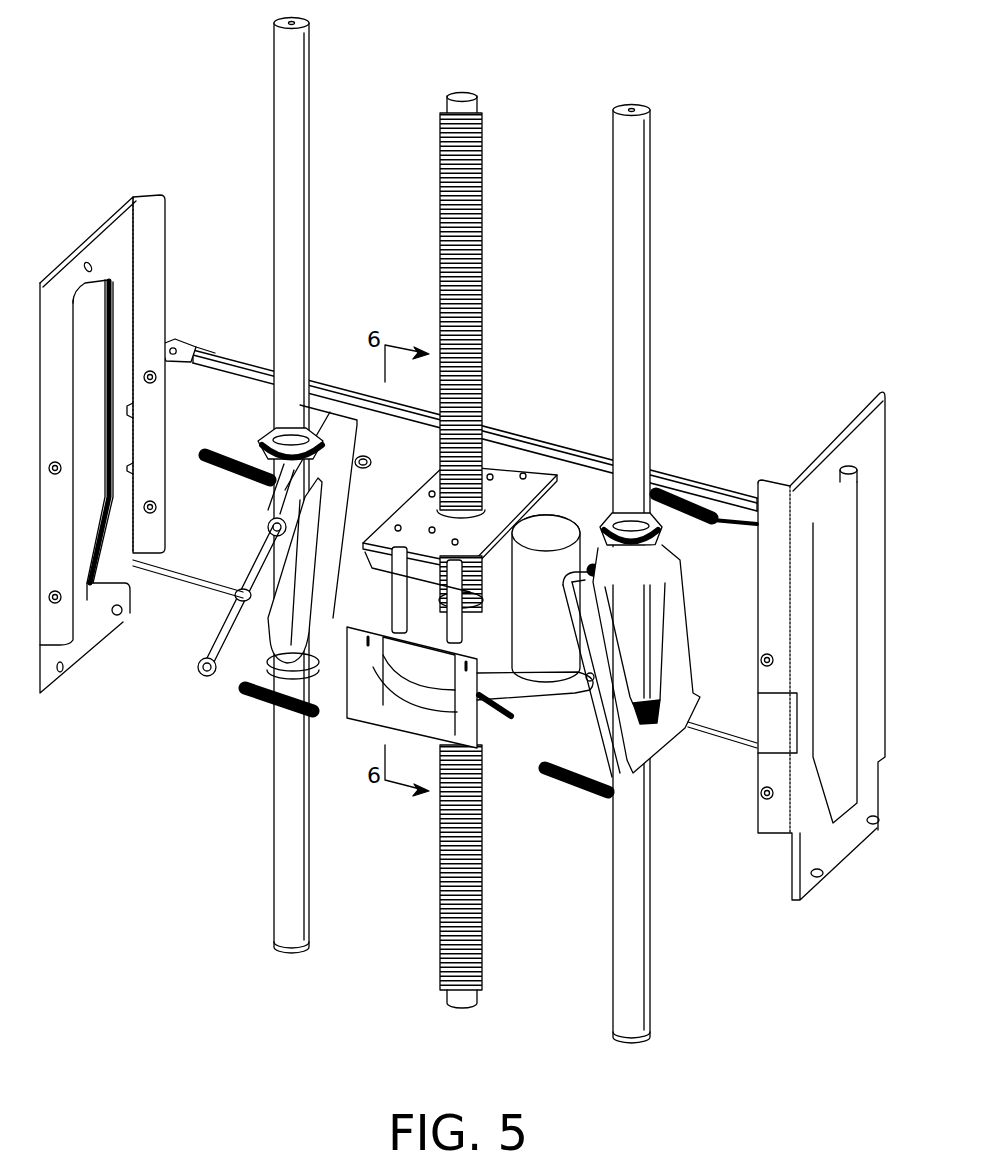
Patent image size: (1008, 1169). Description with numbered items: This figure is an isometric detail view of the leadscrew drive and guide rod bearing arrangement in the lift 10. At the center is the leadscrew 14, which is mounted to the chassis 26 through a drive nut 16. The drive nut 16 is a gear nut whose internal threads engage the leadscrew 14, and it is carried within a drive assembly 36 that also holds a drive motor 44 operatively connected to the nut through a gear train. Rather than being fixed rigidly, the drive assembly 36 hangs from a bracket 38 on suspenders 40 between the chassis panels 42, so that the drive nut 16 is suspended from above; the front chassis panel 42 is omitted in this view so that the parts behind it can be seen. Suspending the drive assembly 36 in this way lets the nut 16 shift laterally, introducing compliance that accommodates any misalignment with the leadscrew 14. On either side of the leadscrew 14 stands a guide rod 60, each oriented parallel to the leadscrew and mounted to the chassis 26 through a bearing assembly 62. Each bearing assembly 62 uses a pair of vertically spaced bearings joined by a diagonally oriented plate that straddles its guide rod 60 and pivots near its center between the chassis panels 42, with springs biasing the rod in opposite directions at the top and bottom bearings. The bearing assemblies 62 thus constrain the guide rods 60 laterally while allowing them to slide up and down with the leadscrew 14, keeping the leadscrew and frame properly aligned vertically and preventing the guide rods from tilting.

The lift 10 is at (775, 319).
The leadscrew 14 is at (472, 263).
The drive nut 16 is at (490, 676).
The chassis 26 is at (85, 648).
The drive assembly 36 is at (352, 736).
The bracket 38 is at (508, 478).
The suspenders 40 is at (455, 610).
The chassis panel 42 is at (224, 364).
The drive motor 44 is at (566, 528).
The guide rod 60 is at (296, 178).
The bearing assembly 62 is at (232, 699).